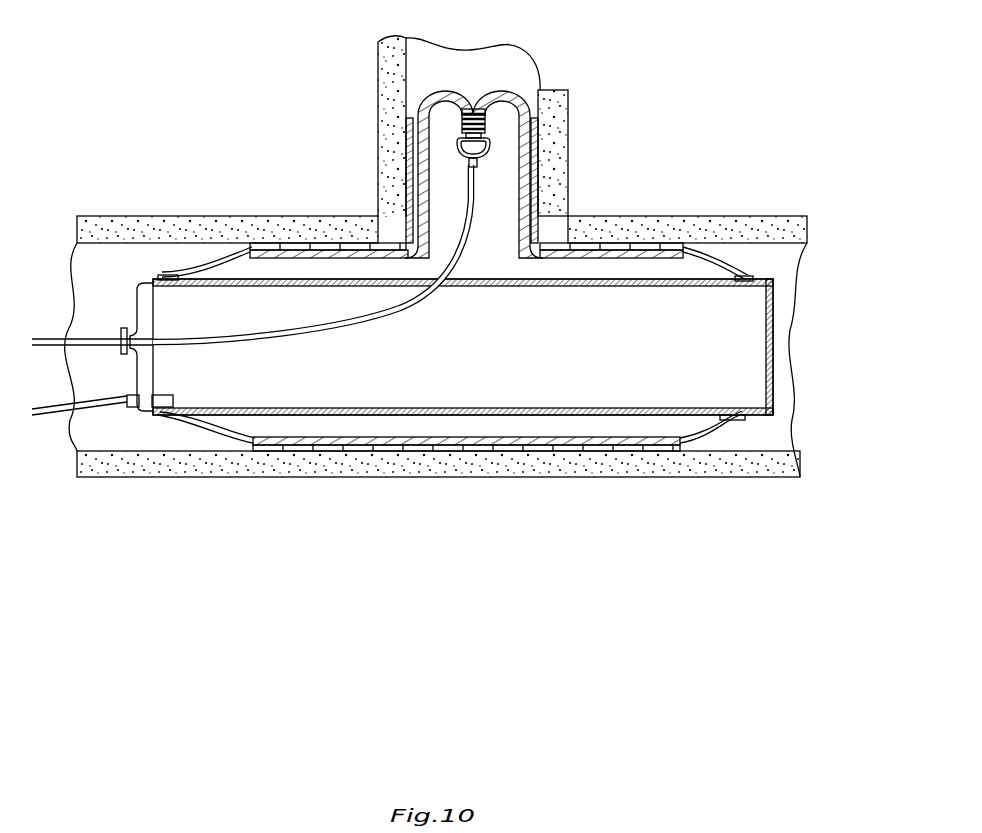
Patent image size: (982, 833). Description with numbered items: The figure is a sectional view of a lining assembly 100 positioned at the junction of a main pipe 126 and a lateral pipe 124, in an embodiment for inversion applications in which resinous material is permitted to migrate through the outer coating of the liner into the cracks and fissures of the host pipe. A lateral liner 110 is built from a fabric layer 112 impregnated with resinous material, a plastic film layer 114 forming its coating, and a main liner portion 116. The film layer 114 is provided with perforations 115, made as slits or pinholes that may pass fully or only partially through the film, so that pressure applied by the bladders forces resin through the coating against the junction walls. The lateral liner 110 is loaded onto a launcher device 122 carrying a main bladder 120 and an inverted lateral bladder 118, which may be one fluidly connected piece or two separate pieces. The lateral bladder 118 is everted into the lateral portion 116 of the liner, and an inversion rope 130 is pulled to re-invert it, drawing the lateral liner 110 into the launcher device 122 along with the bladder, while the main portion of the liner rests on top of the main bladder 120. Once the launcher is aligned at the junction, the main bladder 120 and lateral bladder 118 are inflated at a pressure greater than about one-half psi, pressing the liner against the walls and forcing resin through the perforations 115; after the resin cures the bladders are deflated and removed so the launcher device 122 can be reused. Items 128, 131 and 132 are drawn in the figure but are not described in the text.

The lining assembly 100 is at (489, 347).
The lateral liner 110 is at (510, 119).
The fabric layer 112 is at (520, 203).
The plastic film layer 114 is at (406, 148).
The perforations 115 is at (412, 205).
The main liner portion 116 is at (248, 248).
The lateral bladder 118 is at (425, 183).
The main bladder 120 is at (305, 252).
The launcher device 122 is at (770, 388).
The lateral pipe 124 is at (568, 130).
The main pipe 126 is at (736, 216).
The housing top wall 128 is at (547, 288).
The inversion rope 130 is at (472, 240).
The bulb 131 is at (460, 145).
The lower conduit 132 is at (130, 412).